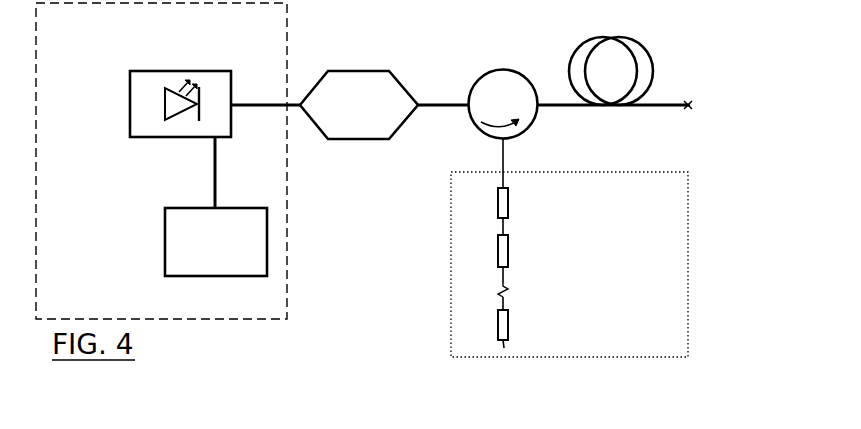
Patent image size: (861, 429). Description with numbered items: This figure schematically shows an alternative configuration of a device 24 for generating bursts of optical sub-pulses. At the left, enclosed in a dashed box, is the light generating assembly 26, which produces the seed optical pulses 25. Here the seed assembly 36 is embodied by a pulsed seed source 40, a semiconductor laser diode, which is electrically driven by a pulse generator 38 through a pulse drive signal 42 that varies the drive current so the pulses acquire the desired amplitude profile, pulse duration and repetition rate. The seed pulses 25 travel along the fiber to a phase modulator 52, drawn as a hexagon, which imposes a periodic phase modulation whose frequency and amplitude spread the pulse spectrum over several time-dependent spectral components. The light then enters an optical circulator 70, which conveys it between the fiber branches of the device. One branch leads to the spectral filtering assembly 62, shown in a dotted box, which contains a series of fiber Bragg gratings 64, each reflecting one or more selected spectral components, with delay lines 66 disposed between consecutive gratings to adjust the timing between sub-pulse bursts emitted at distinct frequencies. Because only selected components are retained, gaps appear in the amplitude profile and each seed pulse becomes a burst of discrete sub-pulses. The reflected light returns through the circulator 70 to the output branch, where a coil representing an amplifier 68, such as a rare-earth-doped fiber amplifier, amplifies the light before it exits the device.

The device 24 is at (313, 423).
The seed optical pulses 25 is at (265, 103).
The light generating assembly 26 is at (251, 322).
The seed assembly 36 is at (141, 422).
The pulse generator 38 is at (163, 247).
The pulsed seed source 40 is at (148, 140).
The pulse drive signal 42 is at (215, 172).
The phase modulator 52 is at (398, 77).
The spectral filtering assembly 62 is at (658, 330).
The fiber Bragg gratings 64 is at (509, 204).
The delay lines 66 is at (502, 223).
The amplifiers 68 is at (652, 62).
The optical circulator 70 is at (498, 88).